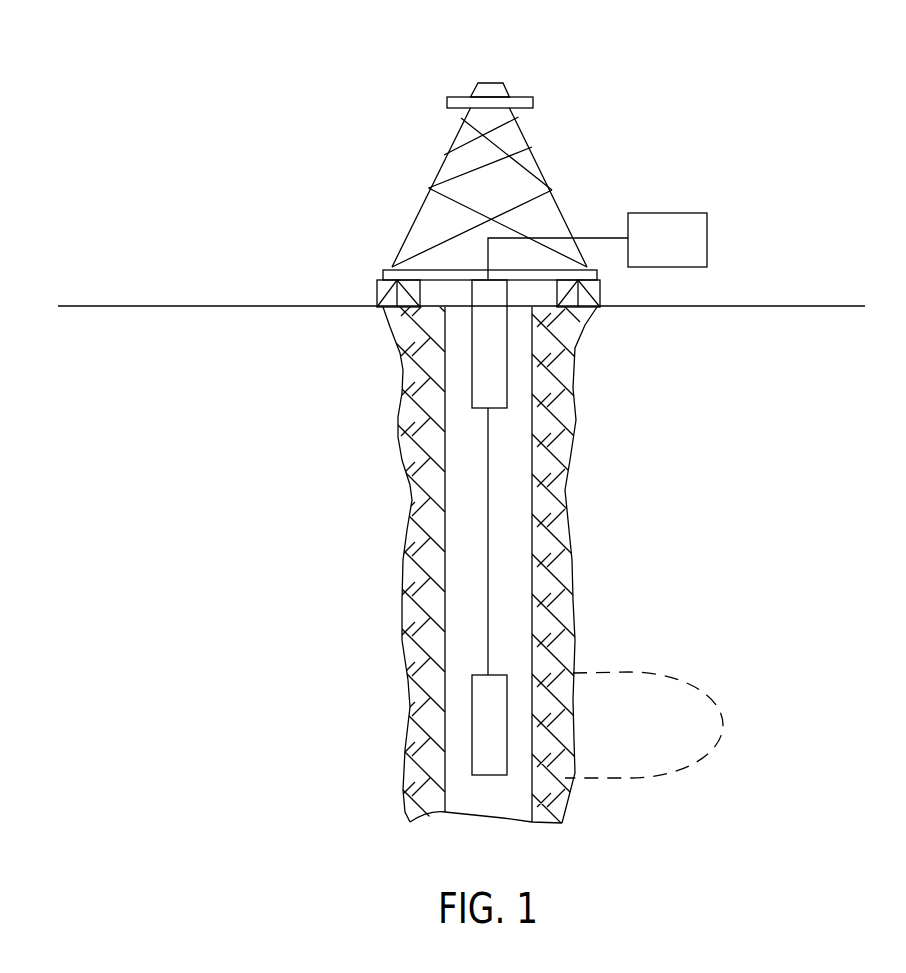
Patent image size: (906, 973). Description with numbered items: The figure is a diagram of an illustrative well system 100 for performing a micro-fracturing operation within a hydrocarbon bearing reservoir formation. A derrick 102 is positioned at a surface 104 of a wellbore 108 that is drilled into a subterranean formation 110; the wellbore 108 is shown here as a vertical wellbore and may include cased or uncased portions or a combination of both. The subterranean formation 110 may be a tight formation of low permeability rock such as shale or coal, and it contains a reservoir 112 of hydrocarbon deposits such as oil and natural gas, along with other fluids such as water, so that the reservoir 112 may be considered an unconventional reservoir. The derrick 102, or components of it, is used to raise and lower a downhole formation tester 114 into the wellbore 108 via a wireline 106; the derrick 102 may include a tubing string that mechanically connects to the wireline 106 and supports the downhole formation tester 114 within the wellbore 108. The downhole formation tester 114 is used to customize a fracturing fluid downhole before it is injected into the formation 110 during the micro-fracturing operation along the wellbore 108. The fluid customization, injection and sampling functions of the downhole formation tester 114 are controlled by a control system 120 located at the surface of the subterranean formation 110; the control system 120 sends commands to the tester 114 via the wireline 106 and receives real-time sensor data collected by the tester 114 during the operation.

The well system 100 is at (172, 83).
The derrick 102 is at (525, 133).
The surface 104 is at (482, 343).
The wireline 106 is at (495, 617).
The wellbore 108 is at (470, 457).
The subterranean formation 110 is at (560, 387).
The reservoir 112 is at (652, 712).
The downhole formation tester 114 is at (470, 720).
The control system 120 is at (597, 246).